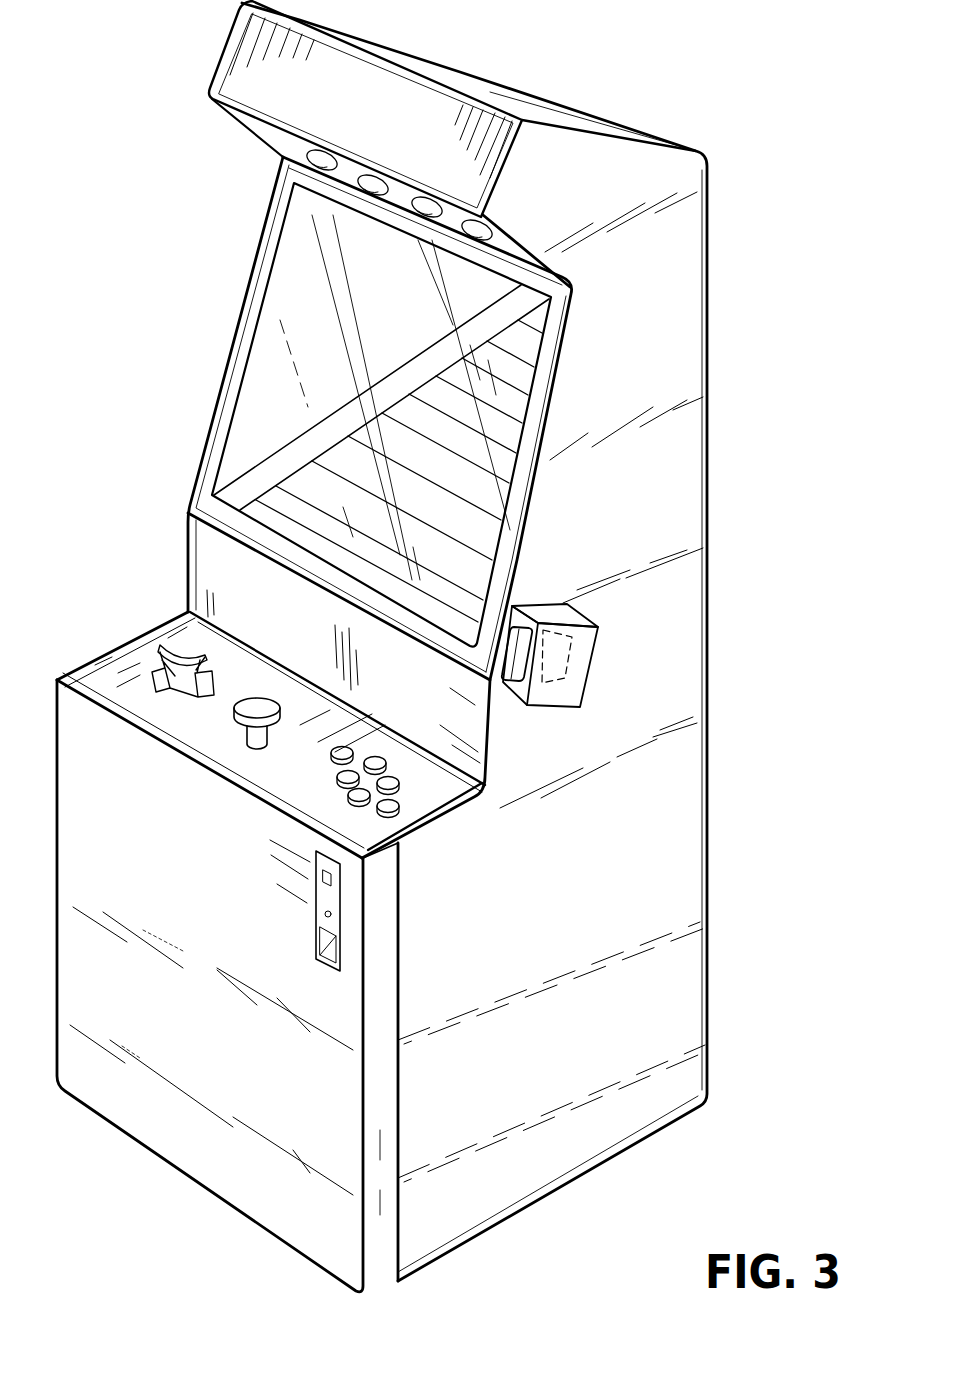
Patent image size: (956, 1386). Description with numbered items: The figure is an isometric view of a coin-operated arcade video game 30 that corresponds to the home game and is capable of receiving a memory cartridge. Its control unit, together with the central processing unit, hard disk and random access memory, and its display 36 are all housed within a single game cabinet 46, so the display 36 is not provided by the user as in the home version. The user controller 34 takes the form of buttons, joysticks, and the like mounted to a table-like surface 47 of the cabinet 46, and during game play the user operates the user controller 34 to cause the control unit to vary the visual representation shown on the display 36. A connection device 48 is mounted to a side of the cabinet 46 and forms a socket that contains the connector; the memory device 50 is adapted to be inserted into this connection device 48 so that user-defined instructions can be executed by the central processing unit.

The arcade video game 30 is at (796, 116).
The user controller 34 is at (203, 653).
The display 36 is at (268, 358).
The game cabinet 46 is at (686, 490).
The table-like surface 47 is at (128, 658).
The connection device 48 is at (577, 697).
The memory device 50 is at (519, 686).